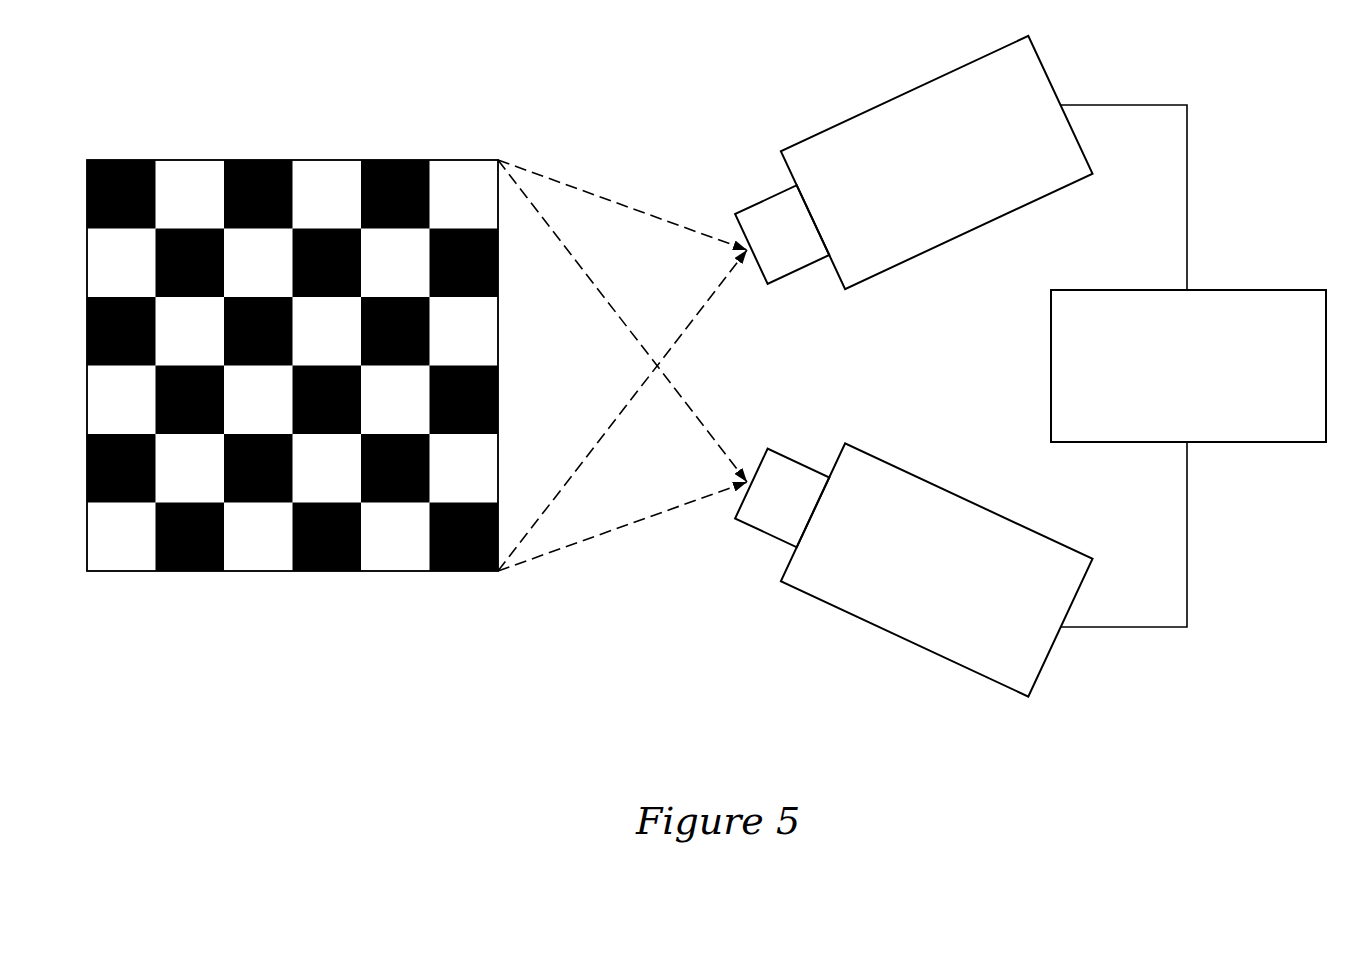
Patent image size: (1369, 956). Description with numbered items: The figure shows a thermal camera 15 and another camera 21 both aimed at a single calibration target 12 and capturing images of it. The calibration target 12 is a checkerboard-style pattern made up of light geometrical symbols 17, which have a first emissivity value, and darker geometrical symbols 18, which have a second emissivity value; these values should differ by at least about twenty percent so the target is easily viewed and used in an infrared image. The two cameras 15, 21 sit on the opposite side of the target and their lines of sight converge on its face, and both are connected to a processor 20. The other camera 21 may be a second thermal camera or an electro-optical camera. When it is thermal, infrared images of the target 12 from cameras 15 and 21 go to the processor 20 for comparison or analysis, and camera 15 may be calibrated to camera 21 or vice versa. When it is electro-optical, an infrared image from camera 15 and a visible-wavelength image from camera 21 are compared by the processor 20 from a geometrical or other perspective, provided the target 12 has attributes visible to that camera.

The calibration target 12 is at (478, 82).
The thermal camera 15 is at (895, 97).
The light geometrical symbols 17 is at (481, 334).
The darker geometrical symbols 18 is at (255, 160).
The processor 20 is at (1282, 290).
The another camera 21 is at (903, 640).